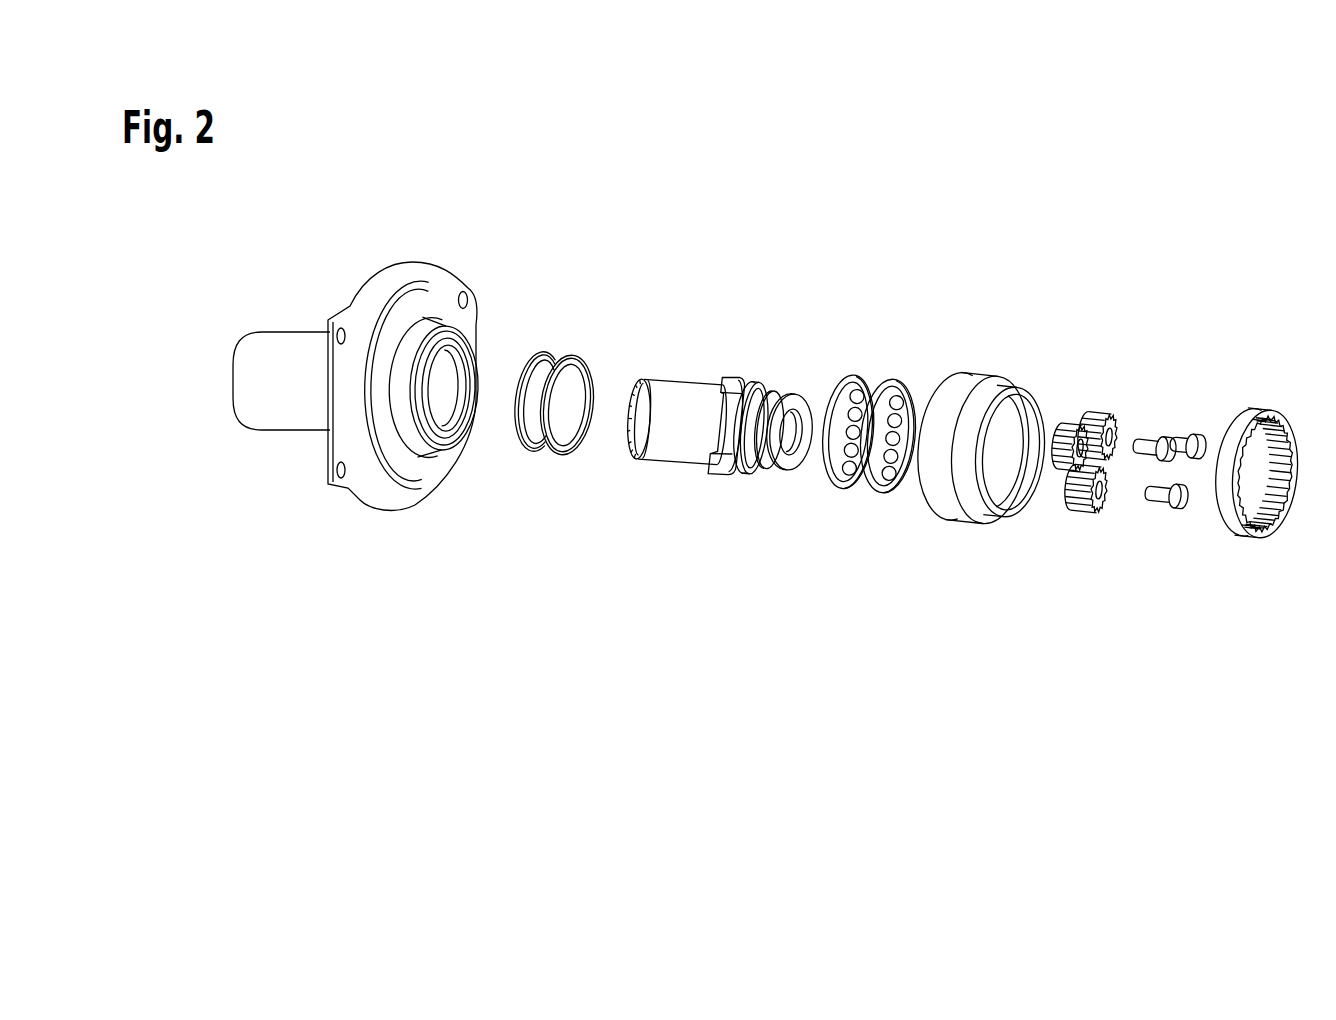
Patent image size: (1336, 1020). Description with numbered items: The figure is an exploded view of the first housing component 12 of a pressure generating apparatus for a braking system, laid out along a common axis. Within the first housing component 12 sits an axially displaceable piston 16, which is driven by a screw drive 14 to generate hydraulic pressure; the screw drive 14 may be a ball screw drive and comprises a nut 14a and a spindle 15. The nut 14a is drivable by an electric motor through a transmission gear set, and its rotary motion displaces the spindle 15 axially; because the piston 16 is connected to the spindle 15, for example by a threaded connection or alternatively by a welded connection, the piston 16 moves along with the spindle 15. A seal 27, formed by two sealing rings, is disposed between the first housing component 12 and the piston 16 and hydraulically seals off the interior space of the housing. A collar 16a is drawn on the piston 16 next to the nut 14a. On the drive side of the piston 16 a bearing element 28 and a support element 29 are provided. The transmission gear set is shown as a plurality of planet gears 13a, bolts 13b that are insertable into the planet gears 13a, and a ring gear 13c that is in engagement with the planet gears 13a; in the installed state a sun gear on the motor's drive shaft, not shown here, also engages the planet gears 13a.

The first housing component 12 is at (1273, 567).
The seal 27 is at (524, 352).
The piston 16 is at (679, 395).
The collar of shaft 16a is at (745, 385).
The screw drive 14 is at (748, 472).
The nut 14a is at (775, 472).
The spindle 15 is at (793, 430).
The bearing element 28 is at (850, 382).
The support element 29 is at (1012, 418).
The planet gears 13a is at (1062, 422).
The bolts 13b is at (1150, 443).
The ring gear 13c is at (1245, 410).